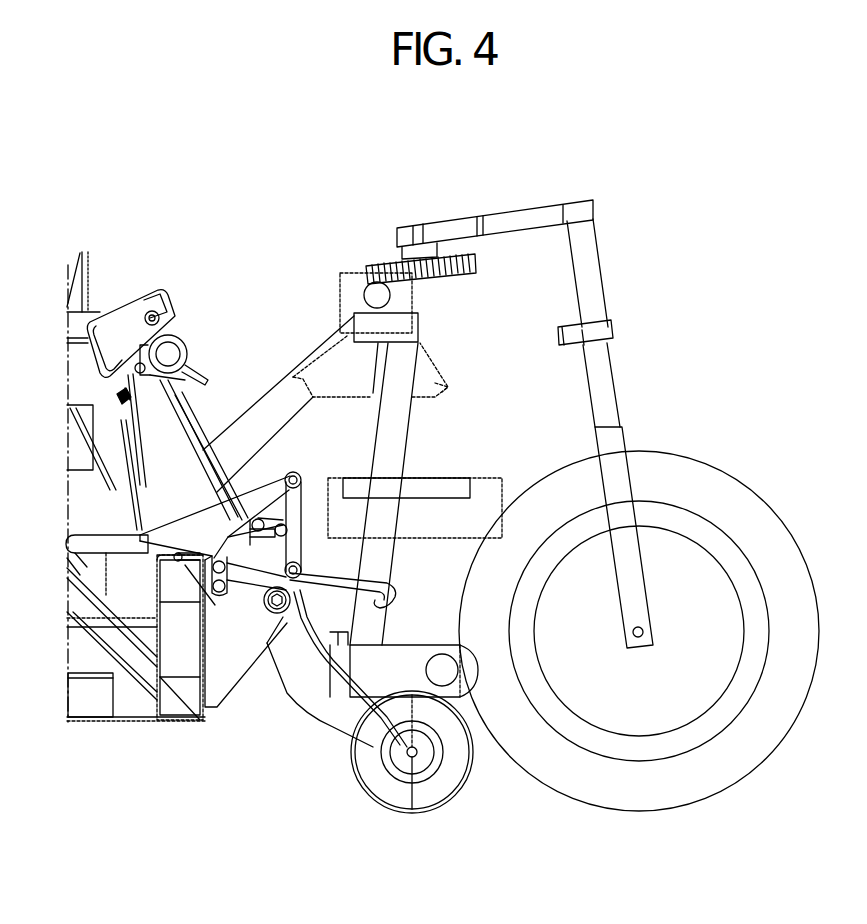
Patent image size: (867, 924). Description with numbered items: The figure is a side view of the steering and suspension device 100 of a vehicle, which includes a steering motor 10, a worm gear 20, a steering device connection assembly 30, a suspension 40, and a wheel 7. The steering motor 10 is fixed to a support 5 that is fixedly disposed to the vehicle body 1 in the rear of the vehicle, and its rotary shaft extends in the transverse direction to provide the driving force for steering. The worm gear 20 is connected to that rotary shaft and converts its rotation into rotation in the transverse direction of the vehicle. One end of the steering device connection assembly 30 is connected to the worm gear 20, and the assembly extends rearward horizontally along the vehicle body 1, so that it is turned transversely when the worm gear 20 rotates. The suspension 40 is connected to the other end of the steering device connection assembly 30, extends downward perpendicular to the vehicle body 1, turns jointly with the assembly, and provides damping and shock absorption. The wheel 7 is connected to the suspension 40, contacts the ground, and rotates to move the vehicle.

The vehicle body 1 is at (262, 755).
The support 5 is at (410, 432).
The wheel 7 is at (736, 490).
The steering motor 10 is at (342, 300).
The worm gear 20 is at (378, 262).
The steering device connection assembly 30 is at (503, 222).
The suspension 40 is at (606, 284).
The steering and suspension device 100 is at (563, 174).